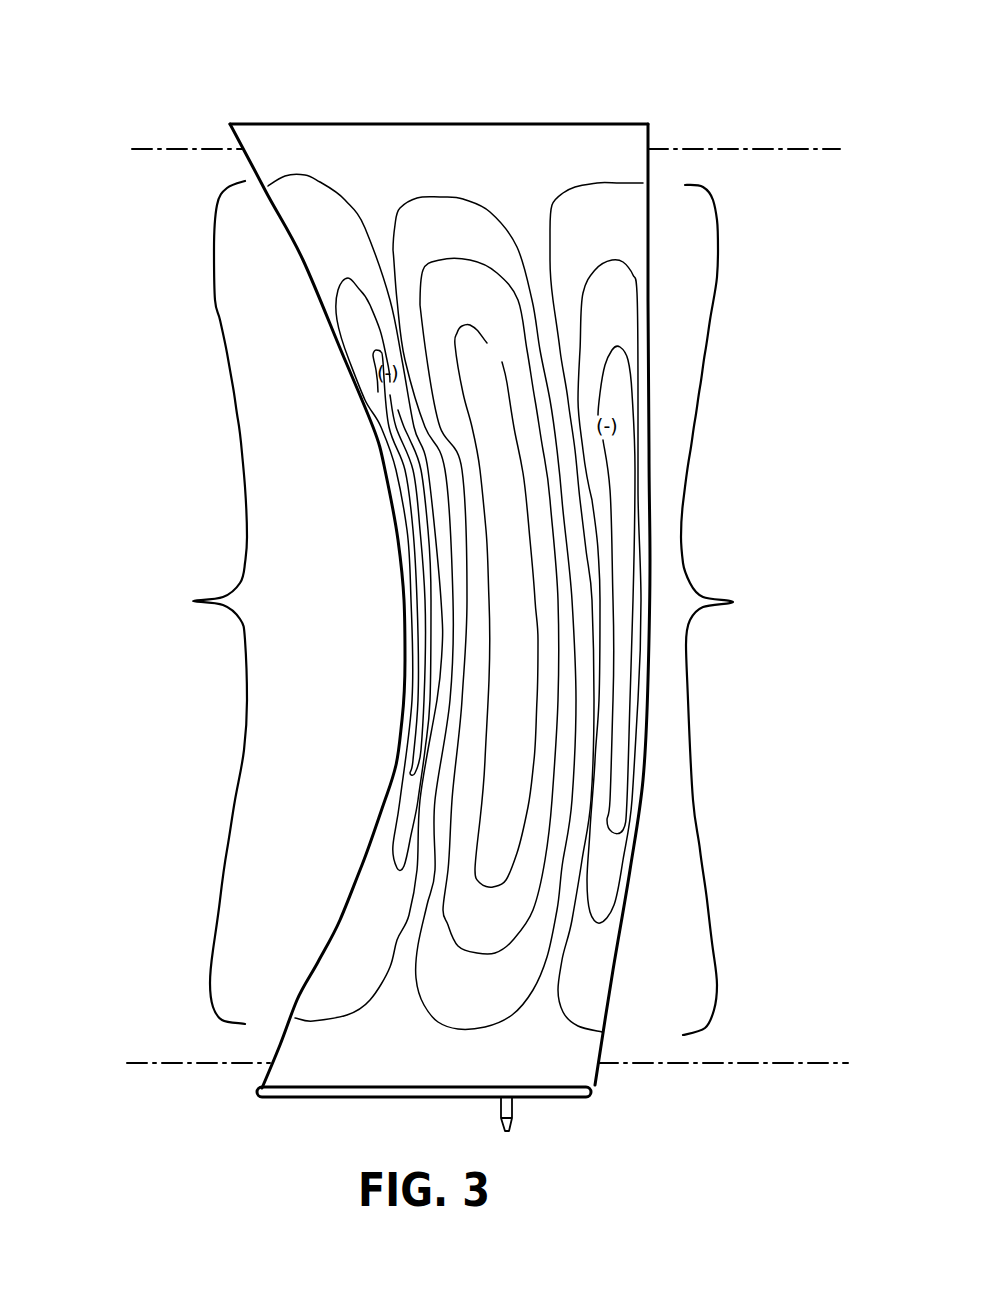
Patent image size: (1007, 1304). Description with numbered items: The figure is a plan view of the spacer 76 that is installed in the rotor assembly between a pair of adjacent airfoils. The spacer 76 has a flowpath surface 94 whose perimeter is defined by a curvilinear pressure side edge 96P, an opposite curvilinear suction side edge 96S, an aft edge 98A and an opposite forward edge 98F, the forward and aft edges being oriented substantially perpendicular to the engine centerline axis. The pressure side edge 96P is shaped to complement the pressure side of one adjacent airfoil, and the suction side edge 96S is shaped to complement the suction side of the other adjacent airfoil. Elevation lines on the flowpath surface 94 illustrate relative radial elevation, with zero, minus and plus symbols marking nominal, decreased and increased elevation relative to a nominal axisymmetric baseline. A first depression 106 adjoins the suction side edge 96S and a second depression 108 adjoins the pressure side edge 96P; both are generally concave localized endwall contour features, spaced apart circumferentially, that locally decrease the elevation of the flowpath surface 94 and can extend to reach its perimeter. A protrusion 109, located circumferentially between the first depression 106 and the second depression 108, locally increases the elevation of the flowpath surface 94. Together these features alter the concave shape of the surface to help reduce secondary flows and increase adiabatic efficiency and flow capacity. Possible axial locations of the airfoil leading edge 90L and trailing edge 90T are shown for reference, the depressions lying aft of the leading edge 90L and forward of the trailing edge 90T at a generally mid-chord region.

The spacer 76 is at (200, 93).
The trailing edge 90T is at (157, 147).
The leading edge 90L is at (142, 1062).
The flowpath surface 94 is at (495, 168).
The suction side edge 96S is at (280, 215).
The pressure side edge 96P is at (648, 219).
The aft edge 98A is at (613, 124).
The forward edge 98F is at (337, 1090).
The first depression 106 is at (198, 602).
The second depression 108 is at (735, 610).
The protrusion 109 is at (513, 580).